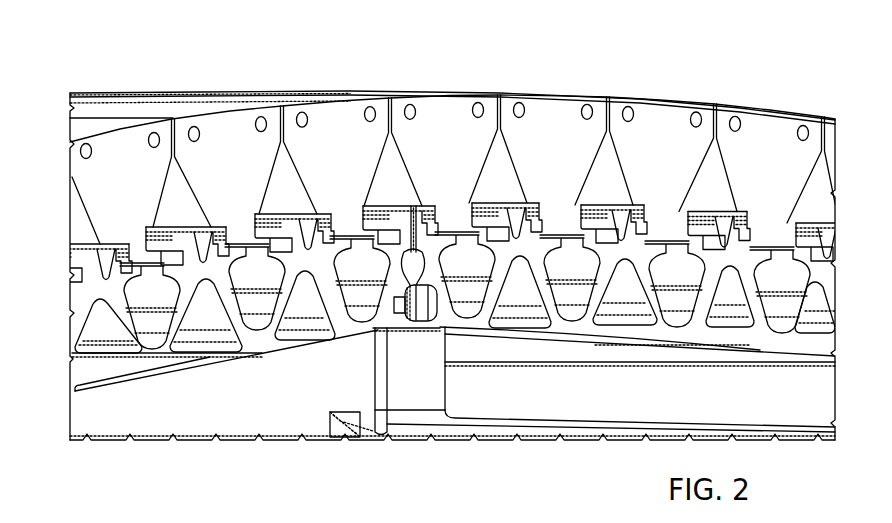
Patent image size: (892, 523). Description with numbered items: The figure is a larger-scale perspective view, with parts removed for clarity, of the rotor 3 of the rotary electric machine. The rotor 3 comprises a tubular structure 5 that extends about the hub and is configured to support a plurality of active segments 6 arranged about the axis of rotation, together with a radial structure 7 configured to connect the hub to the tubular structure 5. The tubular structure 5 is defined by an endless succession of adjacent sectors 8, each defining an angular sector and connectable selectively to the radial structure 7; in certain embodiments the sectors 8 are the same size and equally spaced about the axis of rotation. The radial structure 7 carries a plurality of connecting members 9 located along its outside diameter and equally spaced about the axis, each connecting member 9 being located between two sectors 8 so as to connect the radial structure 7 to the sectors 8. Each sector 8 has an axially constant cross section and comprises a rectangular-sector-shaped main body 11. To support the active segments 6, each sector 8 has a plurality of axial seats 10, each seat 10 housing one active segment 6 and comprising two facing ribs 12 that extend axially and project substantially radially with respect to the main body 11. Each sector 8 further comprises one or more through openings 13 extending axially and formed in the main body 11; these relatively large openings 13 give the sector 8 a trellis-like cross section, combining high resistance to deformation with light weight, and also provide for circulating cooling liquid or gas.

The rotor 3 is at (720, 74).
The tubular structure 5 is at (93, 400).
The active segments 6 is at (132, 138).
The radial structure 7 is at (354, 421).
The sectors 8 is at (237, 377).
The connecting members 9 is at (388, 348).
The axial seats 10 is at (145, 266).
The main body 11 is at (258, 346).
The ribs 12 is at (125, 255).
The through openings 13 is at (160, 359).